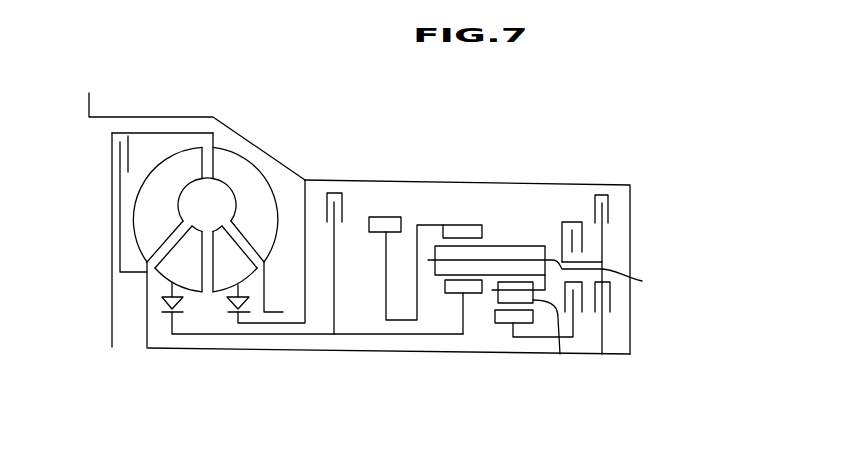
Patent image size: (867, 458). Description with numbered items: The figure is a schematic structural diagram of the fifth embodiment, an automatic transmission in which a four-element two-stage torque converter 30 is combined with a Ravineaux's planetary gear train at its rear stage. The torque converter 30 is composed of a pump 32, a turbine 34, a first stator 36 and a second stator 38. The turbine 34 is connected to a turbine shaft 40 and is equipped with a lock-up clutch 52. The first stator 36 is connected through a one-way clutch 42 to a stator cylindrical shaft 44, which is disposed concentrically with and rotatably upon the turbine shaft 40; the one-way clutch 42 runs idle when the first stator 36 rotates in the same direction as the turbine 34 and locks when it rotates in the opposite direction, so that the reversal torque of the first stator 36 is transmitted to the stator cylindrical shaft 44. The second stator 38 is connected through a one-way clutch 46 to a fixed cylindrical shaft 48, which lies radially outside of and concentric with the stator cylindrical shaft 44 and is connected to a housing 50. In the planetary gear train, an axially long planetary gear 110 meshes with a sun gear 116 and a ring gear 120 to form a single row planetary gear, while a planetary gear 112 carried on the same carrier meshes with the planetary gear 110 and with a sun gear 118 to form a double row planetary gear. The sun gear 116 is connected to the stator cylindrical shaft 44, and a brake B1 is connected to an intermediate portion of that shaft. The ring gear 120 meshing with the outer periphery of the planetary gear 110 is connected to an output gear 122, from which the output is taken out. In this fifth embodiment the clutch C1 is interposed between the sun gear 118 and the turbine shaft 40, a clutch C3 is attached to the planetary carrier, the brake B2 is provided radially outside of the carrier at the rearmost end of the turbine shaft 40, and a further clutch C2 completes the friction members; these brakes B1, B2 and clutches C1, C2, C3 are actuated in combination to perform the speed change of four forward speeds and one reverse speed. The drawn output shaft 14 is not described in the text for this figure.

The torque converter 30 is at (176, 100).
The pump 32 is at (248, 178).
The turbine 34 is at (146, 224).
The first stator 36 is at (172, 273).
The second stator 38 is at (218, 280).
The turbine shaft 40 is at (276, 349).
The one-way clutch 42 is at (162, 311).
The stator cylindrical shaft 44 is at (368, 353).
The one-way clutch 46 is at (226, 313).
The fixed cylindrical shaft 48 is at (296, 336).
The housing 50 is at (494, 249).
The lock-up clutch 52 is at (120, 187).
The output shaft 14 is at (546, 278).
The planetary gear 110 is at (523, 246).
The planetary gear 112 is at (560, 356).
The sun gear 116 is at (468, 300).
The sun gear 118 is at (534, 320).
The ring gear 120 is at (486, 230).
The output gear 122 is at (396, 217).
The brake B1 is at (337, 241).
The brake B2 is at (606, 188).
The clutch C1 is at (584, 313).
The clutch C2 is at (614, 278).
The clutch C3 is at (574, 227).